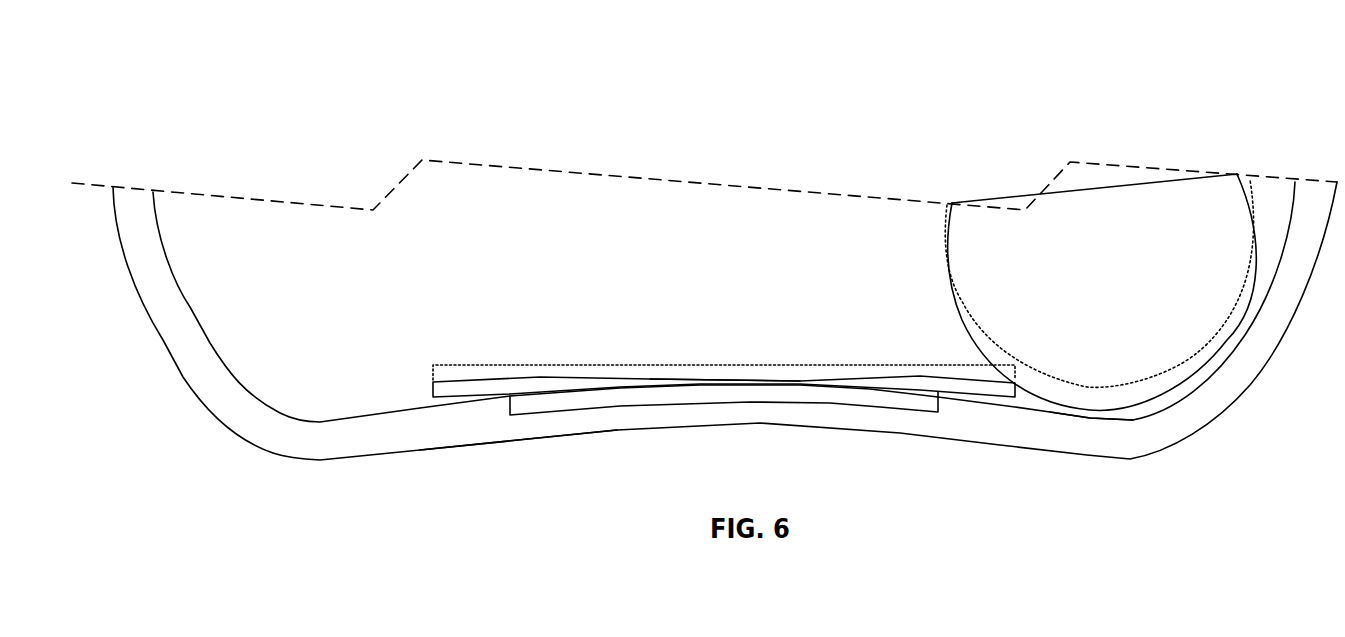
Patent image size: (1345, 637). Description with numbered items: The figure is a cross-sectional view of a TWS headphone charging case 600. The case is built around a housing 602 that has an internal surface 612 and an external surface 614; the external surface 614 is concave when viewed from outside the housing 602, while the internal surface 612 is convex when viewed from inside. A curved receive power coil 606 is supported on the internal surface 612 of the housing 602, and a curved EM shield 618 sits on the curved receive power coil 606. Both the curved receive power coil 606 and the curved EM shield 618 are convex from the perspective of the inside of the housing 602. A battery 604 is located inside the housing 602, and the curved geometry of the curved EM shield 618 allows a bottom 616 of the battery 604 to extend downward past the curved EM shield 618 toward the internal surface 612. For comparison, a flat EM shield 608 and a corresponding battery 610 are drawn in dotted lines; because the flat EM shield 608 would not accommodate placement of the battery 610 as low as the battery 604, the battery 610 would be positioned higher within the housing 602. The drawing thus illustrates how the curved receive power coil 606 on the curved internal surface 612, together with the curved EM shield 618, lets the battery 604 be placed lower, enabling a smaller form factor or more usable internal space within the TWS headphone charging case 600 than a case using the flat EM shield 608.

The TWS headphone charging case 600 is at (1184, 99).
The housing 602 is at (192, 352).
The battery 604 is at (952, 305).
The curved receive power coil 606 is at (610, 393).
The flat EM shield 608 is at (447, 363).
The battery 610 is at (986, 336).
The internal surface 612 is at (482, 398).
The external surface 614 is at (482, 443).
The bottom 616 is at (1085, 407).
The curved EM shield 618 is at (730, 373).